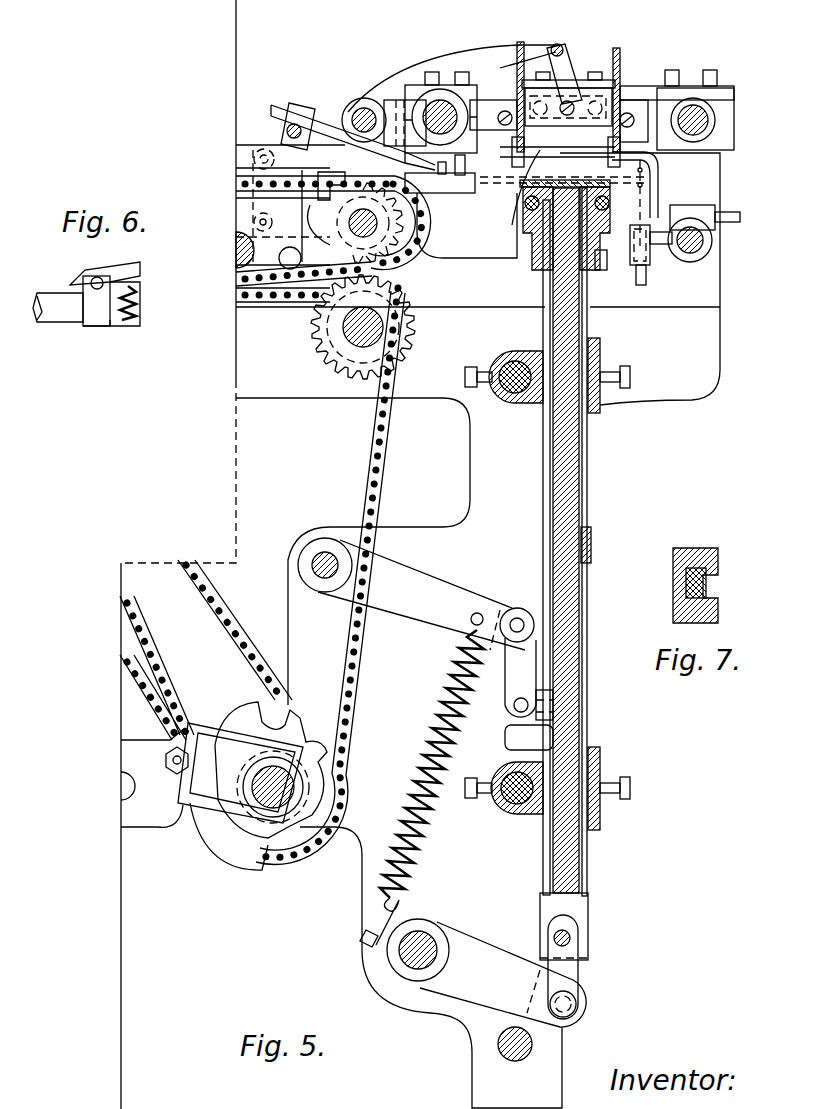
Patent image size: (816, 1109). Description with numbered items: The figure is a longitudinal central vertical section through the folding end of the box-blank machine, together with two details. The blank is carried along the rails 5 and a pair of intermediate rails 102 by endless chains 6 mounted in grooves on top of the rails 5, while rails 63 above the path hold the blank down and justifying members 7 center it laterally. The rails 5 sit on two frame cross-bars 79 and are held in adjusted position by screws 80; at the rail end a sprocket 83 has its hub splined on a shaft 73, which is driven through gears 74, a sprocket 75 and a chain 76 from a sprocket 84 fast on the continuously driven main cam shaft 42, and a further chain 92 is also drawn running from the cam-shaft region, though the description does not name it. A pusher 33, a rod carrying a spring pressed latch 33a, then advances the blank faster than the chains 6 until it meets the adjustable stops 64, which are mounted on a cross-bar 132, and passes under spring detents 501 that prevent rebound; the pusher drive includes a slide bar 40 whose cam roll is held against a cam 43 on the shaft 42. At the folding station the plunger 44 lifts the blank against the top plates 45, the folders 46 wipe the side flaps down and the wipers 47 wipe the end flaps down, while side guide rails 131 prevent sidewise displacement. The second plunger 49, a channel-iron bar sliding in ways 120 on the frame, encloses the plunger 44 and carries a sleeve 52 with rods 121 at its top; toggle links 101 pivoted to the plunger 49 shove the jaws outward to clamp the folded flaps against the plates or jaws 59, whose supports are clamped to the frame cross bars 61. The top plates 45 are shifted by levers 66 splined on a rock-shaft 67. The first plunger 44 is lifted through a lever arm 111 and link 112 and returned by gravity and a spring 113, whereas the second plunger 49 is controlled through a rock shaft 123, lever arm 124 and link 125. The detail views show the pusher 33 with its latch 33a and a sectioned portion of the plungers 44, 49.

In FIG. 5, the rails 5 is at (240, 213).
In FIG. 5, the endless chains 6 is at (237, 250).
In FIG. 5, the justifying members 7 is at (618, 490).
In FIG. 5, the pusher 33 is at (245, 193).
In FIG. 6, the pusher 33 is at (70, 318).
In FIG. 5, the spring pressed latch 33a is at (322, 182).
In FIG. 6, the spring pressed latch 33a is at (118, 268).
In FIG. 5, the slide bar 40 is at (198, 800).
In FIG. 5, the main cam shaft 42 is at (295, 790).
In FIG. 5, the cam 43 is at (240, 866).
In FIG. 5, the plunger 44 is at (583, 507).
In FIG. 7, the plunger 44 is at (708, 582).
In FIG. 5, the plates 45 is at (575, 100).
In FIG. 5, the folders 46 is at (516, 64).
In FIG. 5, the wipers 47 is at (530, 160).
In FIG. 5, the second plunger 49 is at (592, 576).
In FIG. 7, the second plunger 49 is at (715, 556).
In FIG. 5, the sleeve 52 is at (600, 268).
In FIG. 5, the plates or jaws 59 is at (605, 118).
In FIG. 5, the cross bars 61 is at (438, 108).
In FIG. 5, the rails 63 is at (254, 159).
In FIG. 5, the adjustable stops 64 is at (660, 202).
In FIG. 5, the levers 66 is at (440, 68).
In FIG. 5, the rock-shaft 67 is at (360, 112).
In FIG. 5, the shaft 73 is at (350, 232).
In FIG. 5, the gears 74 is at (410, 308).
In FIG. 5, the sprocket 75 is at (345, 355).
In FIG. 5, the chain 76 is at (382, 440).
In FIG. 5, the cross-bars 79 is at (240, 262).
In FIG. 5, the screws 80 is at (292, 270).
In FIG. 5, the sprocket 83 is at (400, 238).
In FIG. 5, the sprocket 84 is at (327, 750).
In FIG. 5, the chain 92 is at (247, 622).
In FIG. 5, the toggle links 101 is at (545, 250).
In FIG. 5, the intermediate rails 102 is at (450, 194).
In FIG. 5, the lever arm 111 is at (411, 594).
In FIG. 5, the link 112 is at (517, 612).
In FIG. 5, the spring 113 is at (458, 660).
In FIG. 5, the ways 120 is at (600, 352).
In FIG. 5, the rods 121 is at (530, 205).
In FIG. 5, the rock shaft 123 is at (432, 935).
In FIG. 5, the lever arm 124 is at (486, 973).
In FIG. 5, the link 125 is at (572, 972).
In FIG. 5, the side guide rails 131 is at (665, 163).
In FIG. 5, the cross-bar 132 is at (705, 245).
In FIG. 5, the spring detents 501 is at (467, 225).